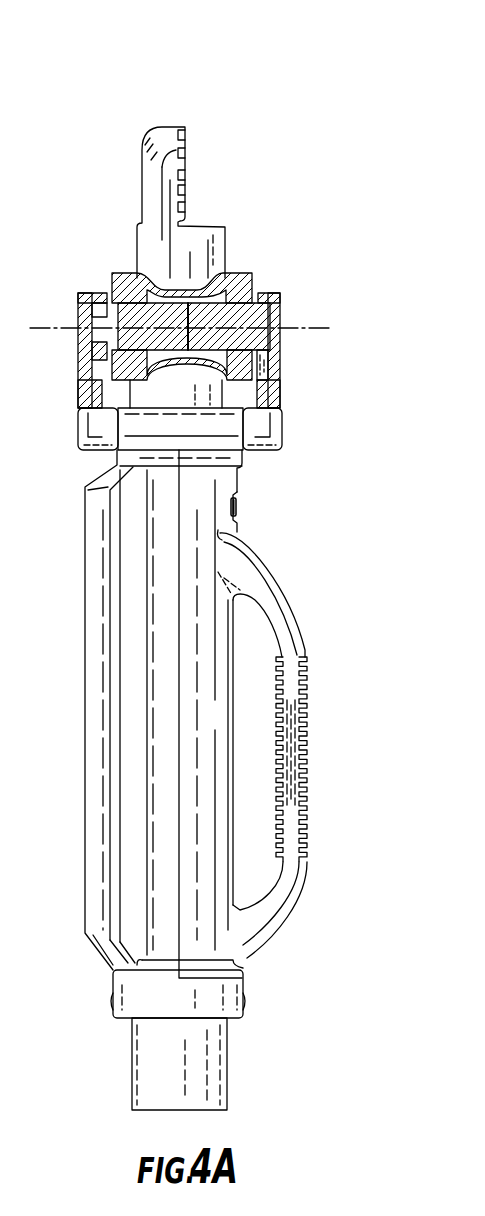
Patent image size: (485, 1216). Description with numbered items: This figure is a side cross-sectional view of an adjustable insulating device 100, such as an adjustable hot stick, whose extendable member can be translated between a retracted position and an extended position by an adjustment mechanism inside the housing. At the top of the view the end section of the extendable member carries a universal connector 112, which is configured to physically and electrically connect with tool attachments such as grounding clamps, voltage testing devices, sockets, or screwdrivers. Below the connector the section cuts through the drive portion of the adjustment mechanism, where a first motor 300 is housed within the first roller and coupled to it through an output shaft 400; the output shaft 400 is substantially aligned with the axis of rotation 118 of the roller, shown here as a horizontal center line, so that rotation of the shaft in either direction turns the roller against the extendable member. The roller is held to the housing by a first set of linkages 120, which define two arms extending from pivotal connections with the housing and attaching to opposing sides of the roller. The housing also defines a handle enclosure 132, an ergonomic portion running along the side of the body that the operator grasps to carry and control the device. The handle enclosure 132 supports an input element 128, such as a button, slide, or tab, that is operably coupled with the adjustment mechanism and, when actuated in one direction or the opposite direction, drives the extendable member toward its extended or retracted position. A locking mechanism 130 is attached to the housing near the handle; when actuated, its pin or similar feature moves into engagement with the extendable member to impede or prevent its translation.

The adjustable insulating device 100 is at (262, 137).
The universal connector 112 is at (135, 147).
The axis of rotation 118 is at (310, 327).
The first set of linkages 120 is at (283, 423).
The input element 128 is at (323, 637).
The locking mechanism 130 is at (240, 507).
The handle enclosure 132 is at (320, 768).
The first motor 300 is at (140, 322).
The output shaft 400 is at (78, 317).